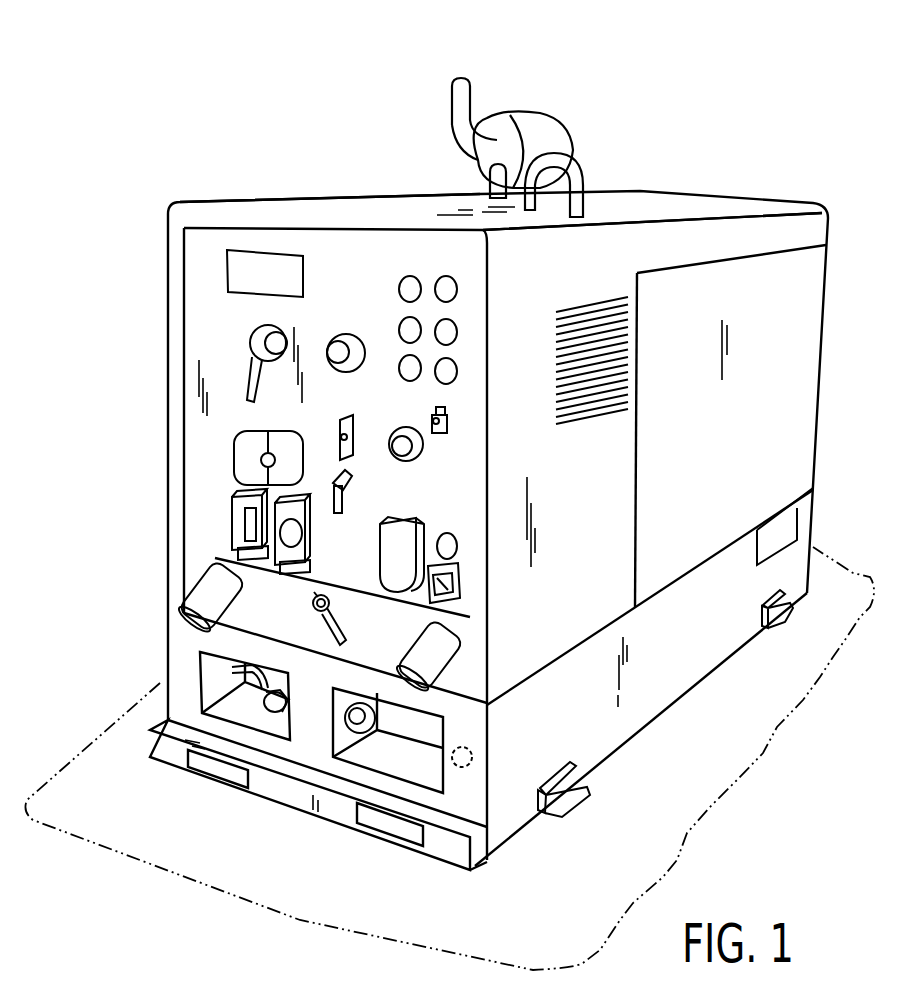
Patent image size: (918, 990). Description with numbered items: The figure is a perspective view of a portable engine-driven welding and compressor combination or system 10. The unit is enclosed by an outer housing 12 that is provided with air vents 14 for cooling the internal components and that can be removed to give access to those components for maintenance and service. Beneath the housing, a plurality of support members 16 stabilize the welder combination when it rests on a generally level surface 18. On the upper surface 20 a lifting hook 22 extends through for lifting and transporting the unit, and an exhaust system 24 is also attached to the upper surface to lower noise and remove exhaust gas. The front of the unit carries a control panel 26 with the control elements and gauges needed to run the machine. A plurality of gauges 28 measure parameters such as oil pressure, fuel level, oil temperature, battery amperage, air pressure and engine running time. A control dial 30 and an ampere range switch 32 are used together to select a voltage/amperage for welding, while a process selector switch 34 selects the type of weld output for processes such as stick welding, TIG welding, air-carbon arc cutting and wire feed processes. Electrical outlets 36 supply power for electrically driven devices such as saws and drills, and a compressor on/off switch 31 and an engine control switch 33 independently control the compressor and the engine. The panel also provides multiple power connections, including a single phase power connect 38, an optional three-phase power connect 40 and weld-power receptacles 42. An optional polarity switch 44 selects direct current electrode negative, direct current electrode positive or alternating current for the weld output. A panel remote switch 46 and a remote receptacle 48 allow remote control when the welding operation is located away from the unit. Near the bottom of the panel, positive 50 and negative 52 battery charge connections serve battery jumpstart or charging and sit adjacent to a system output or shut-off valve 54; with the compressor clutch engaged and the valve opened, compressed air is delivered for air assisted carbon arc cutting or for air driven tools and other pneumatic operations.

The welding and compressor combination 10 is at (185, 150).
The outer housing 12 is at (577, 560).
The air vents 14 is at (592, 418).
The support members 16 is at (595, 800).
The surface 18 is at (515, 910).
The upper surface 20 is at (400, 205).
The lifting hook 22 is at (578, 188).
The exhaust system 24 is at (548, 125).
The control panel 26 is at (309, 323).
The gauges 28 is at (446, 371).
The control dial 30 is at (346, 373).
The compressor on/off switch 31 is at (442, 434).
The ampere range switch 32 is at (254, 368).
The engine control switch 33 is at (413, 461).
The process selector switch 34 is at (250, 460).
The electrical outlets 36 is at (248, 520).
The single phase power connect 38 is at (386, 560).
The three-phase power connect 40 is at (455, 555).
The weld-power receptacles 42 is at (203, 596).
The polarity switch 44 is at (312, 605).
The panel remote switch 46 is at (355, 424).
The remote receptacle 48 is at (345, 500).
The positive battery charge connection 50 is at (348, 724).
The negative battery charge connection 52 is at (452, 755).
The shut-off valve 54 is at (240, 686).